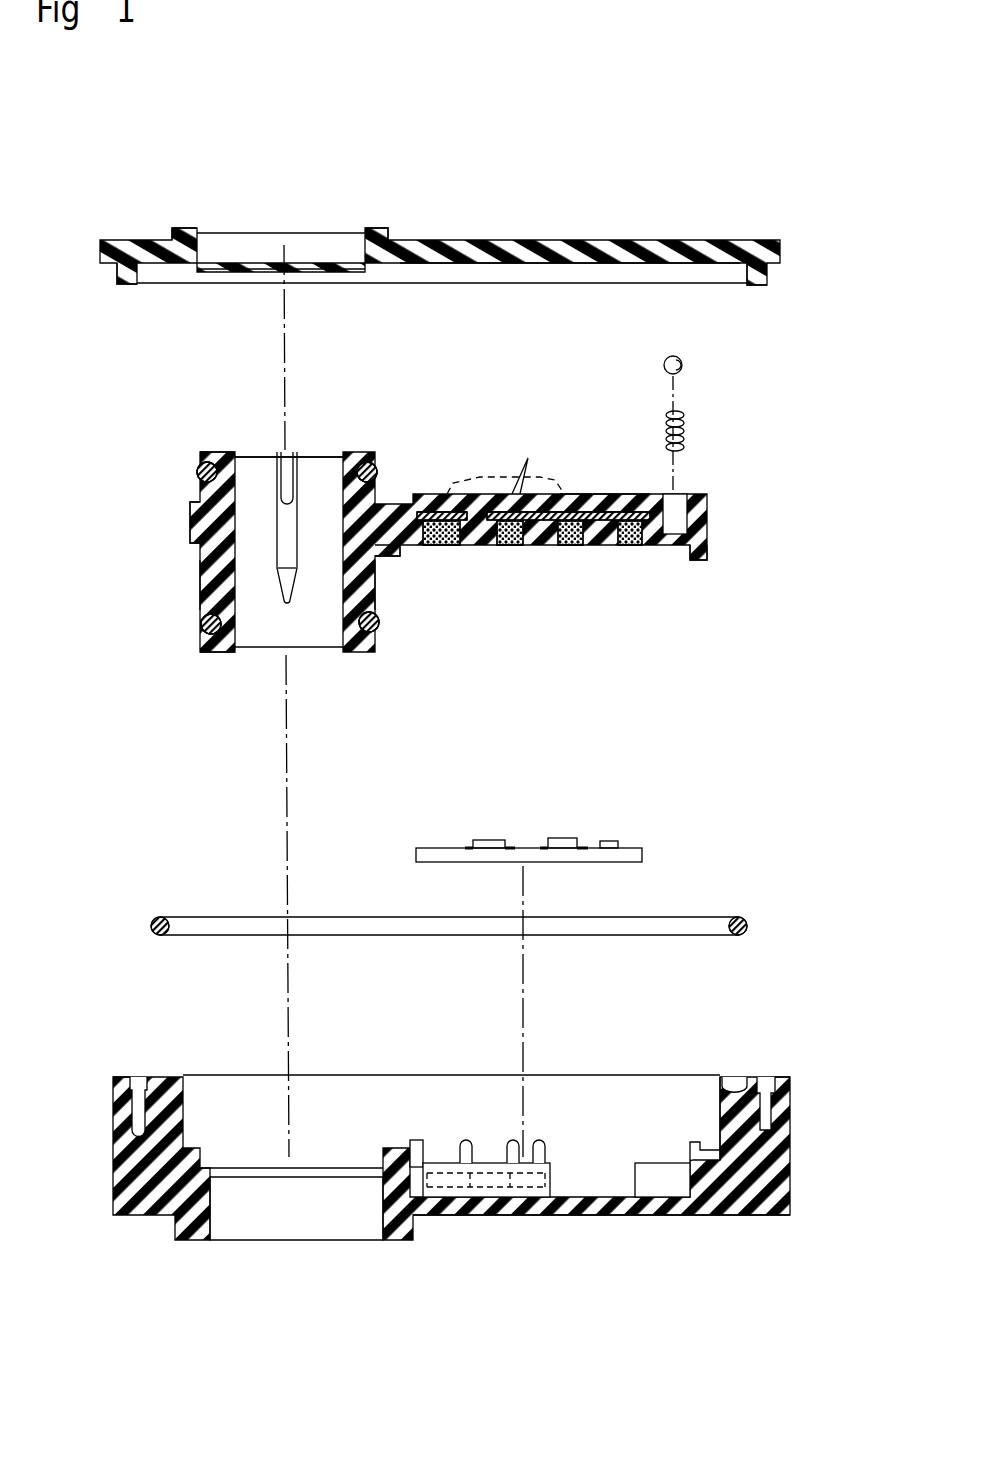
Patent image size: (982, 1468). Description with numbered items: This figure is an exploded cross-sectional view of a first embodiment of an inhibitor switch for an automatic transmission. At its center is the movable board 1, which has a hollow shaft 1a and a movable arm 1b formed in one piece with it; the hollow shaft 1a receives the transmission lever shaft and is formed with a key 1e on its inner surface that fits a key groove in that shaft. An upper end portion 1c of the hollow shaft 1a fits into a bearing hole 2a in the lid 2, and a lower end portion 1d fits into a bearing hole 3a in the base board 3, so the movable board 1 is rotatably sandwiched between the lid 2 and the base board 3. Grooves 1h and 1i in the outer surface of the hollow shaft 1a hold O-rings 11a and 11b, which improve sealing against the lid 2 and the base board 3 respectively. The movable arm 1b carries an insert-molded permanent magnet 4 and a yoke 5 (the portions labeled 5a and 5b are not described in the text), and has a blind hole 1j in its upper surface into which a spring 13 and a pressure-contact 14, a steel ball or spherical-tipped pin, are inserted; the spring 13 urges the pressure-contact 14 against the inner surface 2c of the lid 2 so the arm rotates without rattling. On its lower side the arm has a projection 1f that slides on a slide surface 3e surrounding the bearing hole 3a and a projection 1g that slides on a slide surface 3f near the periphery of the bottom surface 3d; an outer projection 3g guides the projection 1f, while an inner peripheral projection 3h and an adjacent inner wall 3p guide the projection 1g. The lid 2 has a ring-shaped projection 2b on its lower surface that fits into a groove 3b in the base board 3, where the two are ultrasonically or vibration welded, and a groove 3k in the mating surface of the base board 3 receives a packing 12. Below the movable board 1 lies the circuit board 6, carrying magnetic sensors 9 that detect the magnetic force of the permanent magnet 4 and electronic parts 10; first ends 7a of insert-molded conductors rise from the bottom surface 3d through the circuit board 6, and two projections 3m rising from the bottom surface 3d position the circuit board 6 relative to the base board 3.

The movable board 1 is at (441, 467).
The hollow shaft 1a is at (194, 520).
The movable arm 1b is at (605, 494).
The upper end portion 1c is at (200, 452).
The lower end portion 1d is at (212, 650).
The key 1e is at (299, 468).
The projection 1f is at (396, 557).
The projection 1g is at (706, 556).
The groove 1h is at (228, 456).
The groove 1i is at (202, 596).
The blind hole 1j is at (682, 498).
The lid 2 is at (497, 213).
The bearing hole 2a is at (372, 240).
The ring-shaped projection 2b is at (121, 286).
The inner surface 2c is at (610, 270).
The base board 3 is at (806, 1126).
The bearing hole 3a is at (213, 1240).
The groove 3b is at (126, 1079).
The bottom surface 3d is at (620, 1197).
The slide surface 3e is at (410, 1145).
The slide surface 3f is at (720, 1095).
The outer projection 3g is at (457, 1140).
The inner peripheral projection 3h is at (702, 1142).
The groove 3k is at (150, 1079).
The projections 3m is at (688, 1152).
The inner wall 3p is at (737, 1077).
The permanent magnet 4 is at (627, 546).
The yoke 5 is at (658, 497).
The slit 5a is at (528, 458).
The sensing elements 5b is at (437, 547).
The circuit board 6 is at (438, 848).
The first ends 7a is at (510, 1142).
The magnetic sensors 9 is at (556, 838).
The electronic parts 10 is at (612, 841).
The O-ring 11a is at (198, 470).
The O-ring 11b is at (202, 626).
The packing 12 is at (216, 922).
The spring 13 is at (686, 432).
The pressure-contact 14 is at (681, 360).